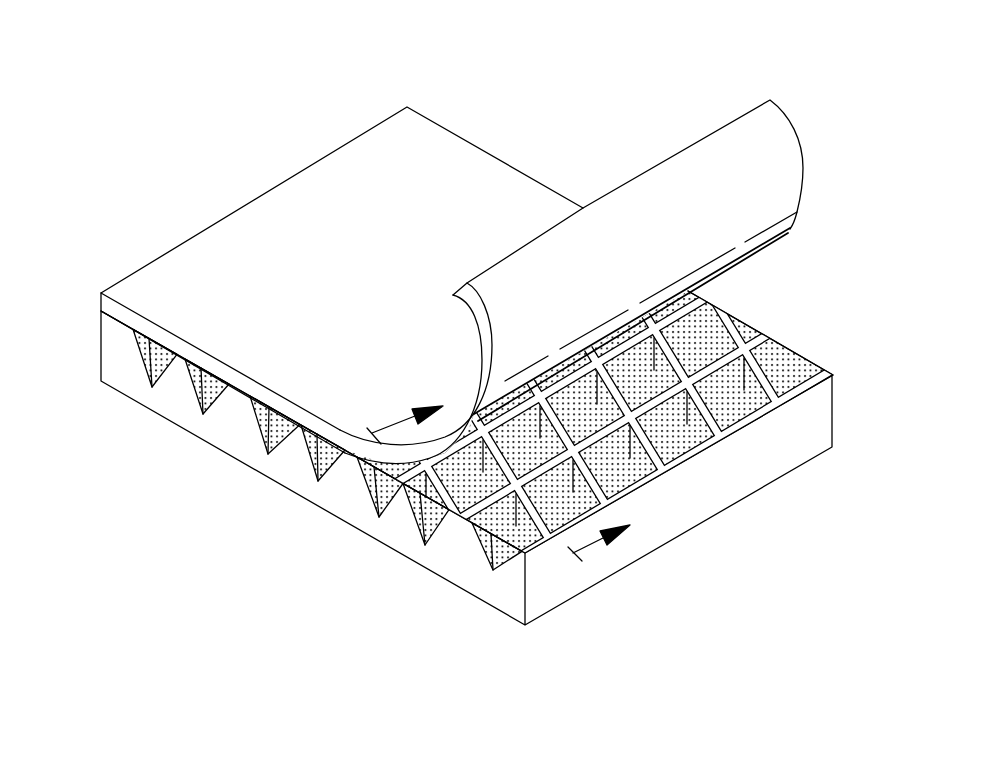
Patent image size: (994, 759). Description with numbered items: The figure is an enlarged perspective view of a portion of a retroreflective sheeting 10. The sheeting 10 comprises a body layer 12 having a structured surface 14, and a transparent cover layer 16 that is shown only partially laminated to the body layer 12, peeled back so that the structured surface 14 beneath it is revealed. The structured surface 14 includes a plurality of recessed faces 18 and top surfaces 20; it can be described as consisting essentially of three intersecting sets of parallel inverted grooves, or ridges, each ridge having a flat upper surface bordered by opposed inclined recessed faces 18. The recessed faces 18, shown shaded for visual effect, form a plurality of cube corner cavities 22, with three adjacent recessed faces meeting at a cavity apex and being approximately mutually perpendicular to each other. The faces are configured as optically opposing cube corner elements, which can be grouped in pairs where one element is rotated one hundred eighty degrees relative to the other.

The retroreflective sheeting 10 is at (728, 53).
The body layer 12 is at (127, 391).
The structured surface 14 is at (757, 314).
The transparent cover layer 16 is at (101, 303).
The recessed faces 18 is at (782, 382).
The top surfaces 20 is at (712, 417).
The cube corner cavities 22 is at (685, 334).